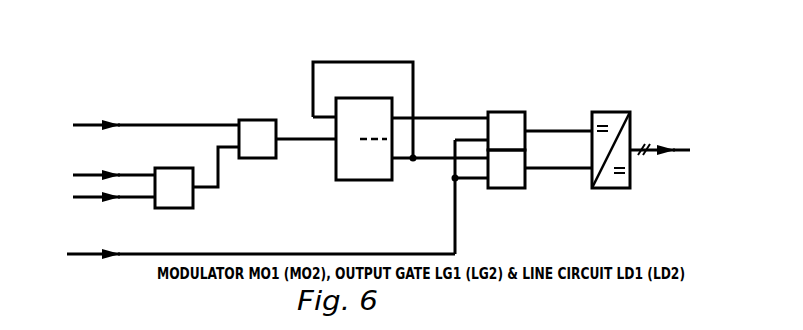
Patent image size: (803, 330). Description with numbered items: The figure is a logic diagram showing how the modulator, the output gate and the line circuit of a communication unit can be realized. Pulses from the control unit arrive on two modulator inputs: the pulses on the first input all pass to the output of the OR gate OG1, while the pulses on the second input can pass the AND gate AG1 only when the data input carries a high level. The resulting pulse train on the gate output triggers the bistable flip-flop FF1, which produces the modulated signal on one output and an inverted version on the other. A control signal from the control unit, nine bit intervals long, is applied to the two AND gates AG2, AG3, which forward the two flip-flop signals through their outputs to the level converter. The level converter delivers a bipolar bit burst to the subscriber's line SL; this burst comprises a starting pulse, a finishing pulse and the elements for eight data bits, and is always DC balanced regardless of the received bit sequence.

The AND gate AG1 is at (175, 209).
The OR gate OG1 is at (253, 119).
The bistable flip-flop FF1 is at (357, 89).
The AND gate AG2 is at (527, 138).
The AND gate AG3 is at (490, 191).
The subscriber's line SL is at (683, 148).